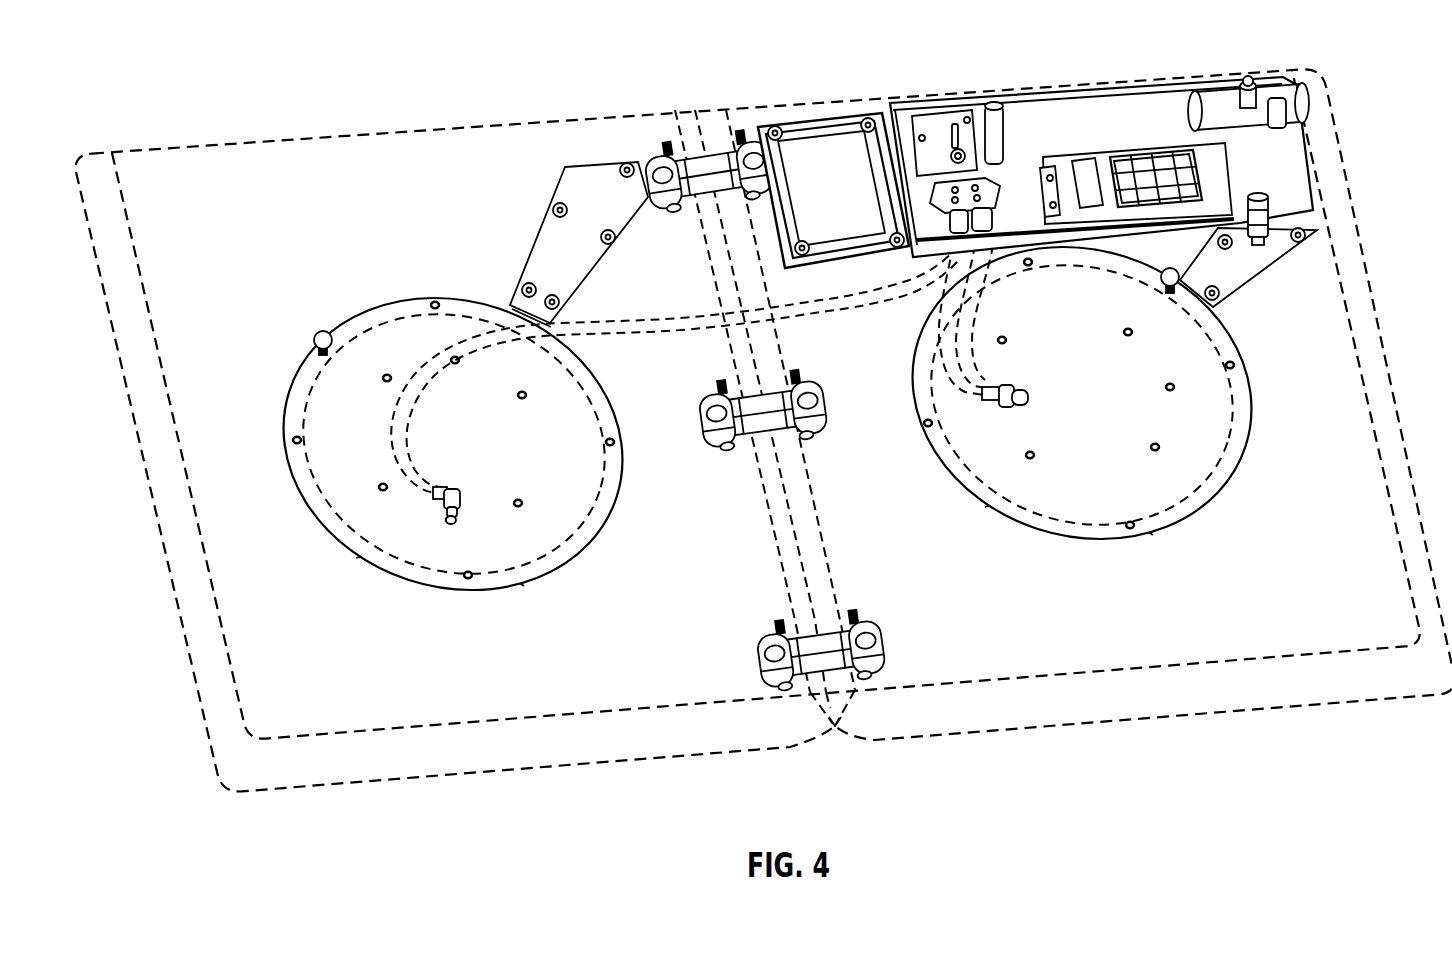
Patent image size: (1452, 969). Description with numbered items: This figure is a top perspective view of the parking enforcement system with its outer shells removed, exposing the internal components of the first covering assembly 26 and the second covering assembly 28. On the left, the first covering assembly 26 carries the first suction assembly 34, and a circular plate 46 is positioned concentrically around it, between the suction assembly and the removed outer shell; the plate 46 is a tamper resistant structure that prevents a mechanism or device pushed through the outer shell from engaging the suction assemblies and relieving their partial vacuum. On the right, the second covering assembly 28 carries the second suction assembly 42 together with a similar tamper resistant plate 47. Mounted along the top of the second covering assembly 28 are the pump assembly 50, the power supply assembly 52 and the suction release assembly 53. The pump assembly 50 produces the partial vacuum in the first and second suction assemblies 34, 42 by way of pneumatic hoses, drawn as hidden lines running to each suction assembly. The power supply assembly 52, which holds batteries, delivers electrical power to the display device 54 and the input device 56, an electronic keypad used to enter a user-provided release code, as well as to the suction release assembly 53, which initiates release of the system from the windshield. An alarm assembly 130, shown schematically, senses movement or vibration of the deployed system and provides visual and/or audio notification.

The first covering assembly 26 is at (395, 145).
The second covering assembly 28 is at (1307, 633).
The first suction assembly 34 is at (453, 457).
The plate 46 is at (418, 586).
The second suction assembly 42 is at (1082, 408).
The tamper resistant plate 47 is at (1040, 543).
The pump assembly 50 is at (1147, 164).
The power supply assembly 52 is at (813, 111).
The suction release assembly 53 is at (943, 107).
The display device 54 is at (1083, 160).
The input device 56 is at (1160, 155).
The alarm assembly 130 is at (1273, 183).